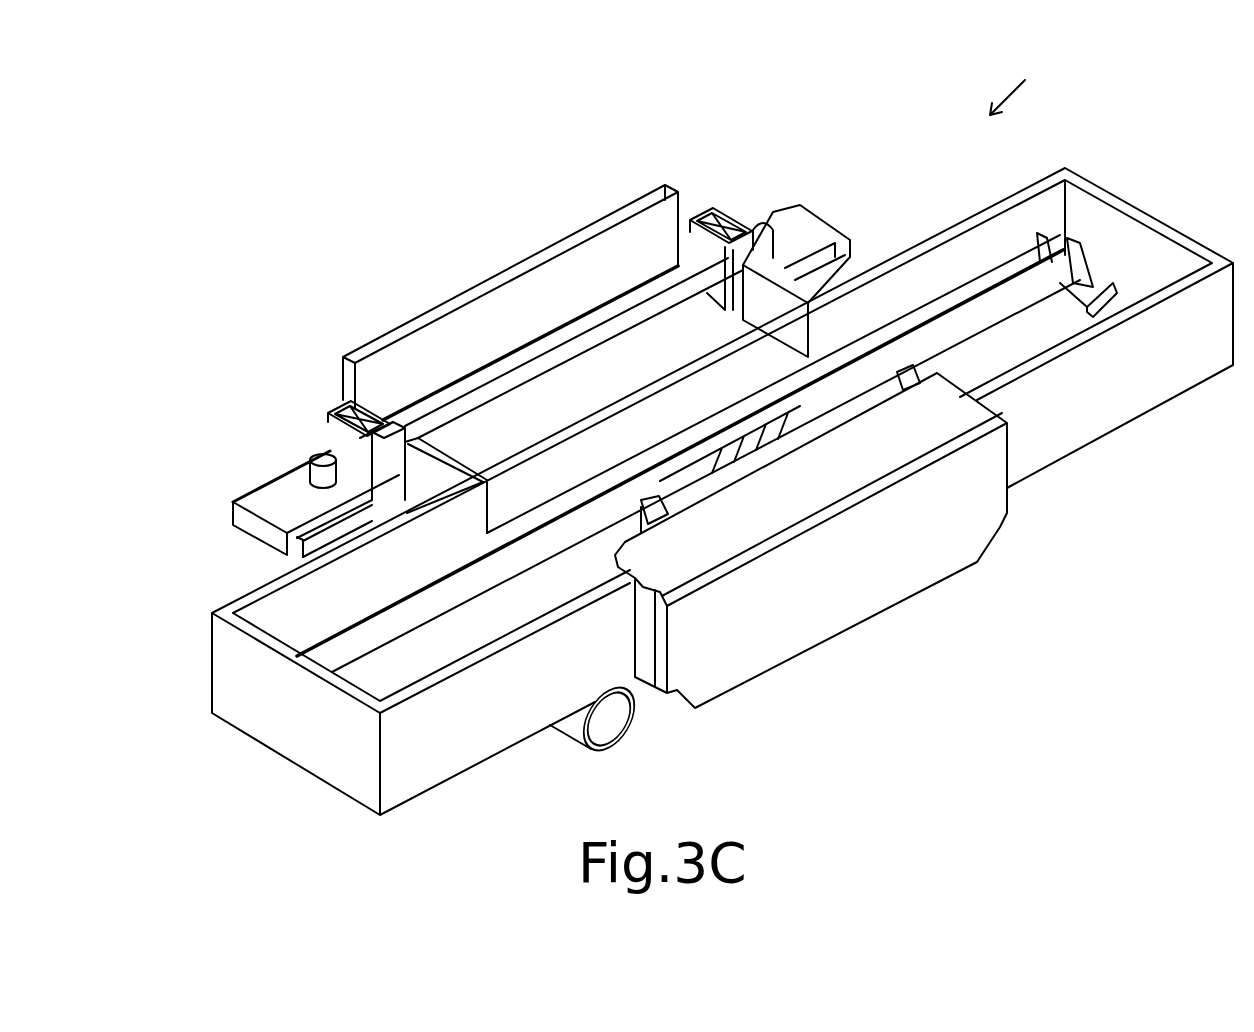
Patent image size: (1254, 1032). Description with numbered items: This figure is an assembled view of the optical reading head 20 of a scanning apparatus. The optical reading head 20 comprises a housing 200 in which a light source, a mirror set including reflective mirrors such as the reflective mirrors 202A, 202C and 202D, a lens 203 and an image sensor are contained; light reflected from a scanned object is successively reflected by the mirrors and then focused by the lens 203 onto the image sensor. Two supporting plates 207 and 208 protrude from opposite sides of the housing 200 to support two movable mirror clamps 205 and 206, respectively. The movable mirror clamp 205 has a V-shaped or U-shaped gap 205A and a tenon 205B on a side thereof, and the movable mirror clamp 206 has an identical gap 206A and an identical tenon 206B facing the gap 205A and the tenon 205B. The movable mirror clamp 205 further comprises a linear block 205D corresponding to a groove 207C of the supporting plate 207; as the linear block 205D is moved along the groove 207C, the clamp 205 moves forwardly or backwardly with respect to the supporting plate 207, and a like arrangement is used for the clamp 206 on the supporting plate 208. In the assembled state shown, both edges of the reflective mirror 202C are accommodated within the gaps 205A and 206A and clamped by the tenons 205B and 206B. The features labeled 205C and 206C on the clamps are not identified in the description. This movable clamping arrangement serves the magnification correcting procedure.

The optical reading head 20 is at (1020, 78).
The housing 200 is at (1178, 363).
The reflective mirror 202A is at (980, 310).
The reflective mirror 202C is at (598, 312).
The reflective mirror 202D is at (738, 528).
The lens 203 is at (760, 463).
The movable mirror clamp 205 is at (280, 500).
The gap 205A is at (382, 412).
The tenon 205B is at (345, 400).
The pin 205C is at (319, 462).
The linear block 205D is at (365, 433).
The movable mirror clamp 206 is at (797, 235).
The gap 206A is at (702, 213).
The tenon 206B is at (718, 233).
The second clip nub 206C is at (760, 225).
The supporting plate 207 is at (272, 518).
The groove 207C is at (373, 490).
The supporting plate 208 is at (818, 276).